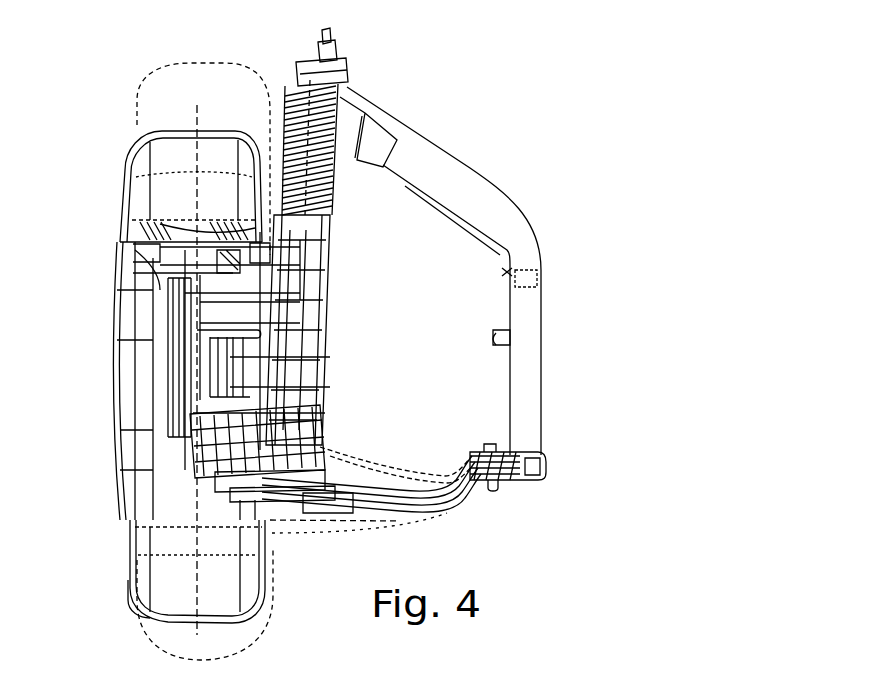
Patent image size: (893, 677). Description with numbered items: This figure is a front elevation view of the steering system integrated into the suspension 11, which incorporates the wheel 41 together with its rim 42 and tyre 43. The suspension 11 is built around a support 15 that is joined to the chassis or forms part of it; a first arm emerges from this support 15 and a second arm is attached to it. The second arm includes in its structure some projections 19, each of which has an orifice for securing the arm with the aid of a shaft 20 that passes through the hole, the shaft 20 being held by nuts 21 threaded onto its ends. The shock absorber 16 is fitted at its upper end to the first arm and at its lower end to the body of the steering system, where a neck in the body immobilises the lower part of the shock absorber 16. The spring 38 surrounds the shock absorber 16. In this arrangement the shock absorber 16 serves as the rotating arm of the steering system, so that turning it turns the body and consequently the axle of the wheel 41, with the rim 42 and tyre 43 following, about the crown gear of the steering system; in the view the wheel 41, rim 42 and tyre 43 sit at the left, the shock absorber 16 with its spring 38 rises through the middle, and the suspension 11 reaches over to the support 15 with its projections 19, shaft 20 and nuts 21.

The suspension 11 is at (536, 180).
The support 15 is at (545, 465).
The shock absorber 16 is at (330, 258).
The projections 19 is at (475, 480).
The shaft 20 is at (500, 487).
The nuts 21 is at (488, 445).
The spring 38 is at (282, 120).
The wheel 41 is at (118, 243).
The rim 42 is at (268, 540).
The tyre 43 is at (128, 590).